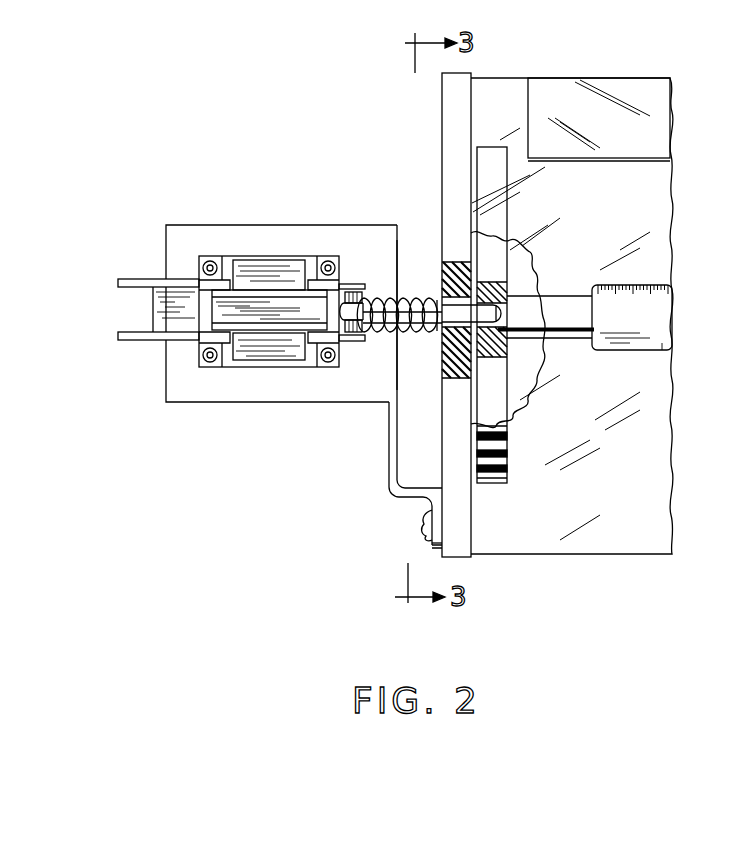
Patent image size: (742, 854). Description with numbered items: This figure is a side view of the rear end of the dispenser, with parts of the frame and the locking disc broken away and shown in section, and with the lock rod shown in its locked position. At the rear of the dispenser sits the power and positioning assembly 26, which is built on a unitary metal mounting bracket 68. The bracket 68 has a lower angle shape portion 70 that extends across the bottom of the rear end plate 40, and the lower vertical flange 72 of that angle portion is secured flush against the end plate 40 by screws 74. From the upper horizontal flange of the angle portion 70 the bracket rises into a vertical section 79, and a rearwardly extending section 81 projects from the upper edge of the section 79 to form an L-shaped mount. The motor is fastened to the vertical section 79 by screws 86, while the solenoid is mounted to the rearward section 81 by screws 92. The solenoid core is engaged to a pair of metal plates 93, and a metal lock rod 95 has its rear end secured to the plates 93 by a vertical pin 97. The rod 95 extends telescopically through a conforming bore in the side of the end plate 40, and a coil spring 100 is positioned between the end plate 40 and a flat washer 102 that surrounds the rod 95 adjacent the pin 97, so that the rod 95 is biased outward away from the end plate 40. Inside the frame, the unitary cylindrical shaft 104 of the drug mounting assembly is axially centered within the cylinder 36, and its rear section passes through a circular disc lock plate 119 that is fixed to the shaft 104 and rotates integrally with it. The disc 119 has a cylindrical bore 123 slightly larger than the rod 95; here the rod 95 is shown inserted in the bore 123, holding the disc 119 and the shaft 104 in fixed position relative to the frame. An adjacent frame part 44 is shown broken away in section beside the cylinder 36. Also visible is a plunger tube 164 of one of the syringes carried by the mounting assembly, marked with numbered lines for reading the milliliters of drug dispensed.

The power and positioning assembly 26 is at (196, 200).
The cylinder 36 is at (630, 540).
The rear end plate 40 is at (452, 133).
The block 44 is at (648, 131).
The mounting bracket 68 is at (366, 497).
The lower angle shape portion 70 is at (417, 472).
The lower vertical flange 72 is at (436, 544).
The screws 74 is at (422, 528).
The vertical section 79 is at (389, 452).
The rearwardly extending section 81 is at (250, 240).
The screws 86 is at (398, 252).
The screws 92 is at (208, 261).
The metal plates 93 is at (140, 279).
The lock rod 95 is at (385, 326).
The vertical pin 97 is at (346, 290).
The coil spring 100 is at (402, 337).
The flat washer 102 is at (379, 298).
The cylindrical shaft 104 is at (538, 275).
The disc lock plate 119 is at (497, 160).
The cylindrical bore 123 is at (508, 331).
The plunger tube 164 is at (662, 348).